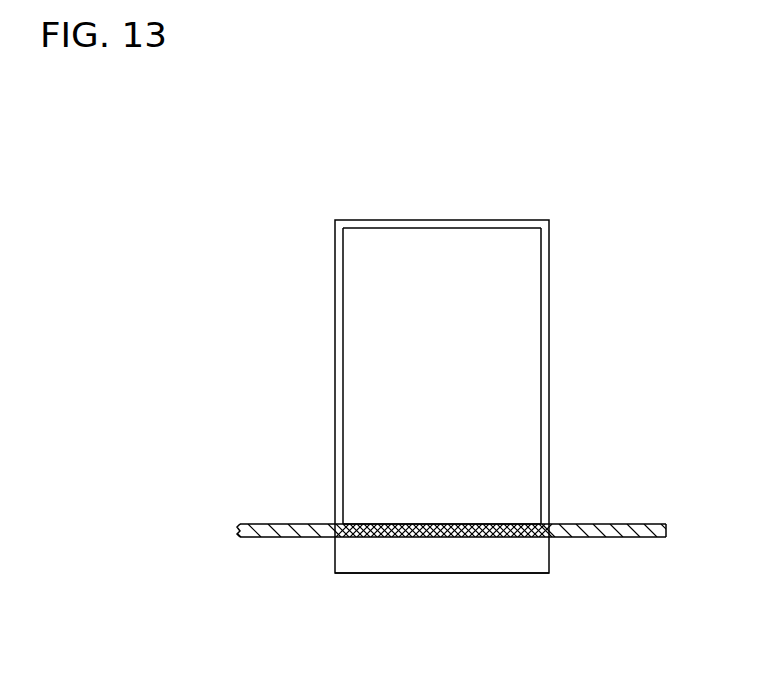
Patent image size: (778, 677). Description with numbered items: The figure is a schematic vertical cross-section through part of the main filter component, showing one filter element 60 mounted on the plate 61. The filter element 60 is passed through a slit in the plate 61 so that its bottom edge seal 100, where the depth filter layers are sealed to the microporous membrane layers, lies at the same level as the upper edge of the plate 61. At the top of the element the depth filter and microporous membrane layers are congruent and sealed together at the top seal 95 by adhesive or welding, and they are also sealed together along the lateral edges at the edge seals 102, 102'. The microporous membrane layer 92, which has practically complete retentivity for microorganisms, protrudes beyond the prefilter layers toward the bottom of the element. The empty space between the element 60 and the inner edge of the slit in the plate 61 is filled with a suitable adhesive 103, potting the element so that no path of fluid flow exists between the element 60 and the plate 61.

The filter element 60 is at (333, 562).
The plate 61 is at (635, 537).
The microporous membrane layer 92 is at (407, 562).
The top seal 95 is at (429, 229).
The bottom seal 100 is at (513, 522).
The edge seal 102 is at (592, 376).
The edge seal 102' is at (288, 376).
The adhesive 103 is at (482, 538).